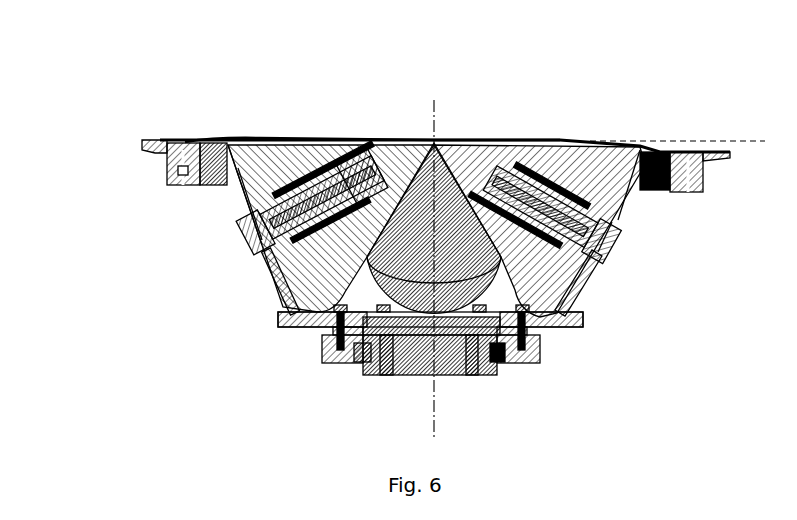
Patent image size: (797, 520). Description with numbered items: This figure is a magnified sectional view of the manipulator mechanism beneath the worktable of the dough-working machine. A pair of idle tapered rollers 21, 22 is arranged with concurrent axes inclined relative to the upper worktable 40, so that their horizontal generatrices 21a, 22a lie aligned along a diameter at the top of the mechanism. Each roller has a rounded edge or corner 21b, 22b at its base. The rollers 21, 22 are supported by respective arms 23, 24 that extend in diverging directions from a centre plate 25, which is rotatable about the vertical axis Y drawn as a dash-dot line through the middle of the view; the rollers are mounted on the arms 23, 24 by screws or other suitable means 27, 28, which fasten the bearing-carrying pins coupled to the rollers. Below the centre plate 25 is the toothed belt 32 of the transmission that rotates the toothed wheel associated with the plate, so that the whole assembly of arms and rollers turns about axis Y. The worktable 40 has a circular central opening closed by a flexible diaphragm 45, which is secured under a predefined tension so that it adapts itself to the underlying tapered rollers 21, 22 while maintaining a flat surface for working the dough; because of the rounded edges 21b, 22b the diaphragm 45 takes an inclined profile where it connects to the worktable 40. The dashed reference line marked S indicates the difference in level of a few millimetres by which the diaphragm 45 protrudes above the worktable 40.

The upper worktable 40 is at (180, 140).
The tapered roller 21 is at (331, 228).
The horizontal generatrix 21a is at (298, 137).
The rounded edge 21b is at (240, 185).
The tapered roller 22 is at (539, 231).
The horizontal generatrix 22a is at (565, 143).
The rounded edge 22b is at (628, 194).
The diaphragm 45 is at (430, 140).
The arm 23 is at (280, 277).
The arm 24 is at (593, 287).
The screw 27 is at (243, 243).
The screw 28 is at (615, 247).
The centre plate 25 is at (547, 327).
The toothed belt 32 is at (323, 353).
The difference in level S is at (738, 141).
The vertical axis Y is at (430, 410).